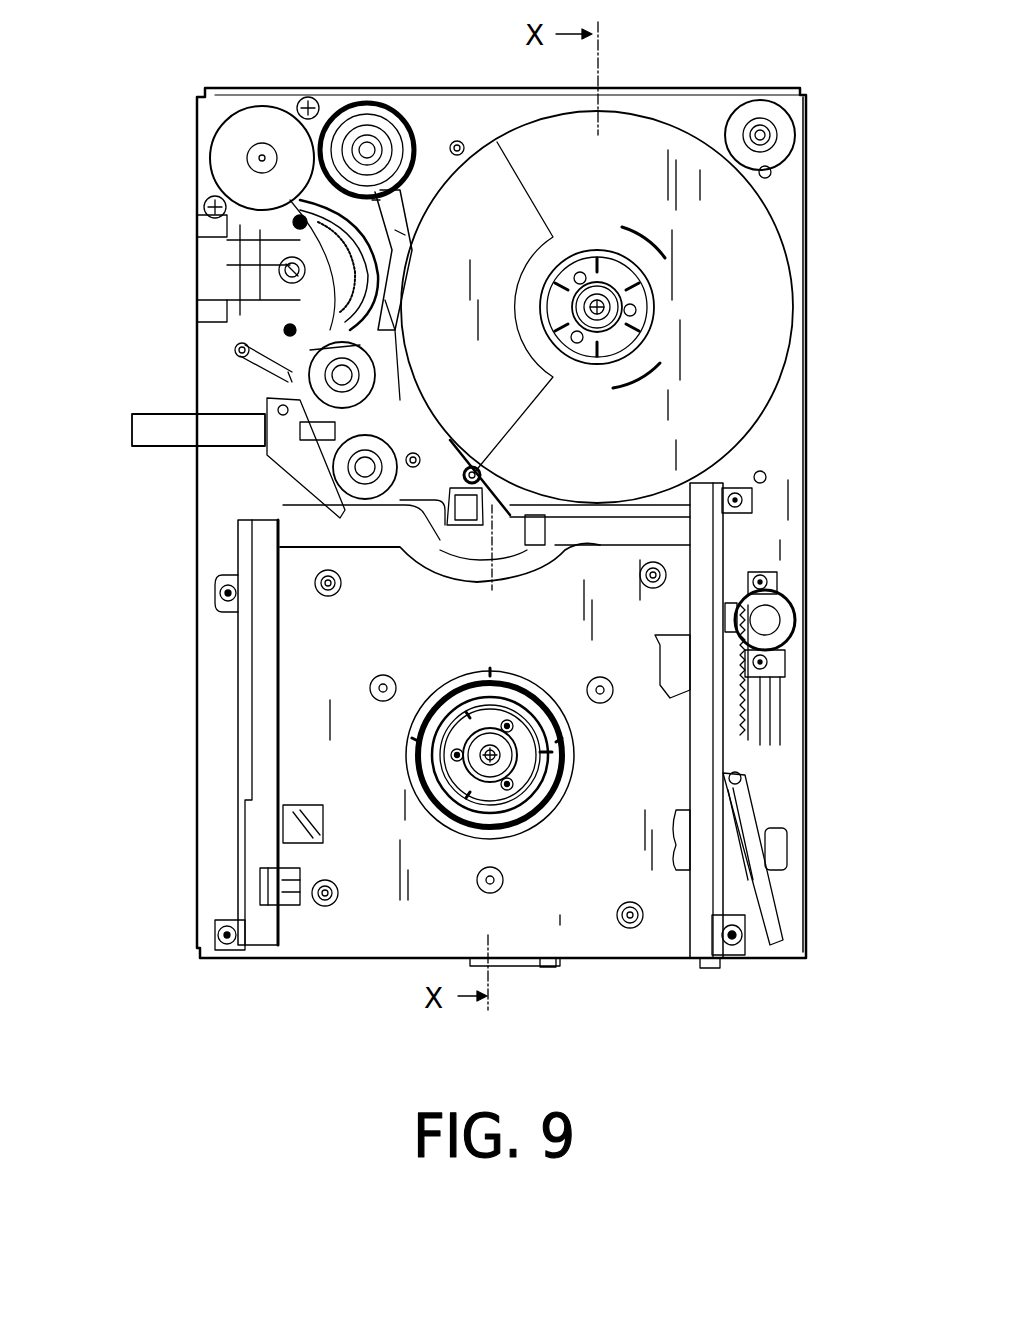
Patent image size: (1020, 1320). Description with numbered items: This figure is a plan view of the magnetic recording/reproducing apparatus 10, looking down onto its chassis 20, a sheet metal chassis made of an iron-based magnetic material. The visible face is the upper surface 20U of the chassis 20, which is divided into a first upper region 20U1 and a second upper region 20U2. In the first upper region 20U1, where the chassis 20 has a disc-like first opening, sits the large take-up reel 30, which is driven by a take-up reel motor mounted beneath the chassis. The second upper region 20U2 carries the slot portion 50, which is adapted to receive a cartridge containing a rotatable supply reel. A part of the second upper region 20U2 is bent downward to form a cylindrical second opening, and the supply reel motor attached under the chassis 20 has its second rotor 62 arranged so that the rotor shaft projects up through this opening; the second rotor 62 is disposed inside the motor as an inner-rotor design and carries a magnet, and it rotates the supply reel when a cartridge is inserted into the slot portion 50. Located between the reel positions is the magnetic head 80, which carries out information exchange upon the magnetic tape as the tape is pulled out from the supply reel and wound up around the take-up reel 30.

The magnetic recording/reproducing apparatus 10 is at (157, 925).
The chassis 20 is at (788, 428).
The upper surface 20U is at (210, 477).
The first upper region 20U1 is at (790, 167).
The second upper region 20U2 is at (205, 832).
The take-up reel 30 is at (768, 256).
The slot portion 50 is at (290, 645).
The second rotor 62 is at (500, 752).
The magnetic head 80 is at (262, 333).